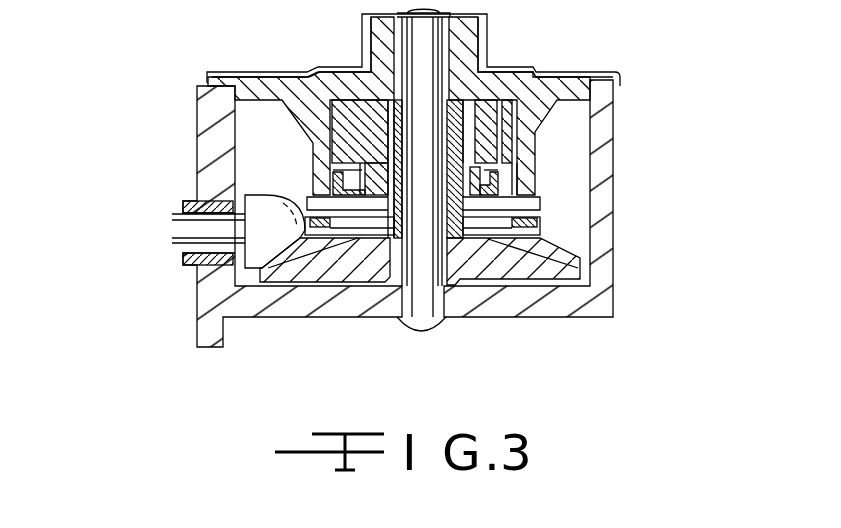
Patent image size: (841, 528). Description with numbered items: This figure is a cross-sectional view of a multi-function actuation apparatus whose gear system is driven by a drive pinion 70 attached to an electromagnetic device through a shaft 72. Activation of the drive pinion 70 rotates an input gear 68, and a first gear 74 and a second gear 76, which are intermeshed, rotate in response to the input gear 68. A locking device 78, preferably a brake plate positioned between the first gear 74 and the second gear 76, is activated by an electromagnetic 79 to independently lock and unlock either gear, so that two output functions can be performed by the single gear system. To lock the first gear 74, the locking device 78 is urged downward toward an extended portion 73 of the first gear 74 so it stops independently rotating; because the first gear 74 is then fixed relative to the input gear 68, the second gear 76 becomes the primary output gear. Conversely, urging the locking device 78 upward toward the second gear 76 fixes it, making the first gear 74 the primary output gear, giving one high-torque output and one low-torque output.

The input gear 68 is at (600, 268).
The drive pinion 70 is at (298, 238).
The shaft 72 is at (170, 231).
The extended portion 73 is at (367, 193).
The first gear 74 is at (490, 67).
The second gear 76 is at (567, 74).
The locking device 78 is at (545, 203).
The electromagnetic 79 is at (540, 222).